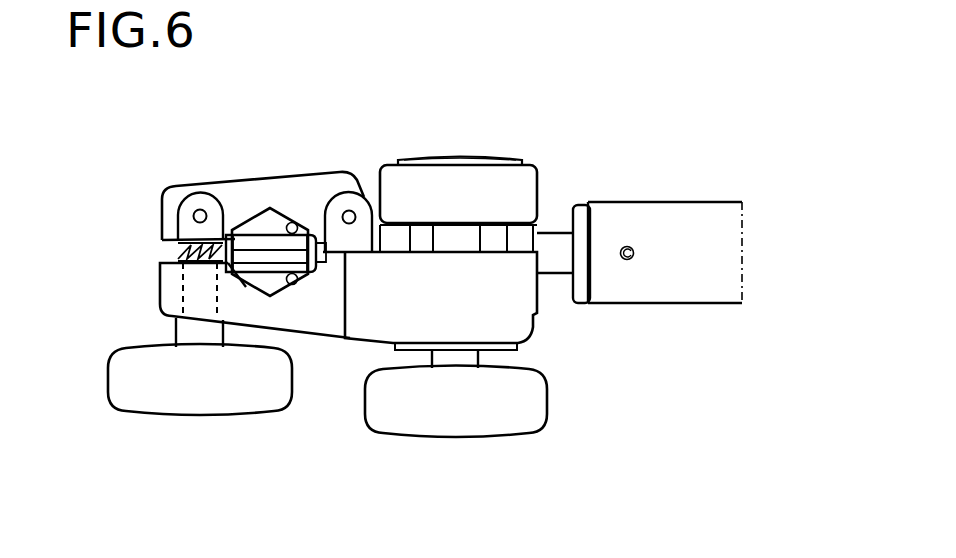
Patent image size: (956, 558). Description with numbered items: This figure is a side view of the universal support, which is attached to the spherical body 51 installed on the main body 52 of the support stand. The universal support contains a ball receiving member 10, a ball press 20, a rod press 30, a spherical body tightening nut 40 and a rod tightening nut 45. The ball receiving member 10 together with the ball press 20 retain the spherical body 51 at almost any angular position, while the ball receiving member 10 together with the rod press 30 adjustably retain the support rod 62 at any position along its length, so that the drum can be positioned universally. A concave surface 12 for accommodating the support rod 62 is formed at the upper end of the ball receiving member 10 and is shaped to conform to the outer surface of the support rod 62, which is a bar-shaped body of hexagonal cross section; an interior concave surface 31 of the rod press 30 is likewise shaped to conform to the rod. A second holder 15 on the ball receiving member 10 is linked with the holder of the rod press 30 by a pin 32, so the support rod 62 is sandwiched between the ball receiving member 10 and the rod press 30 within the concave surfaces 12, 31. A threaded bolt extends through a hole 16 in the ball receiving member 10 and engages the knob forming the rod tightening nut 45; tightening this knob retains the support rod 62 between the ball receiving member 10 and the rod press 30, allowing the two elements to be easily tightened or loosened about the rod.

The ball receiving member 10 is at (532, 323).
The concave surface 12 is at (298, 280).
The second holder 15 is at (345, 232).
The hole 16 is at (163, 296).
The ball press 20 is at (468, 178).
The rod press 30 is at (300, 183).
The interior concave surface 31 is at (297, 225).
The pin 32 is at (351, 210).
The spherical body tightening nut 40 is at (465, 417).
The rod tightening nut 45 is at (245, 397).
The spherical body 51 is at (528, 236).
The main body 52 is at (650, 303).
The support rod 62 is at (260, 228).